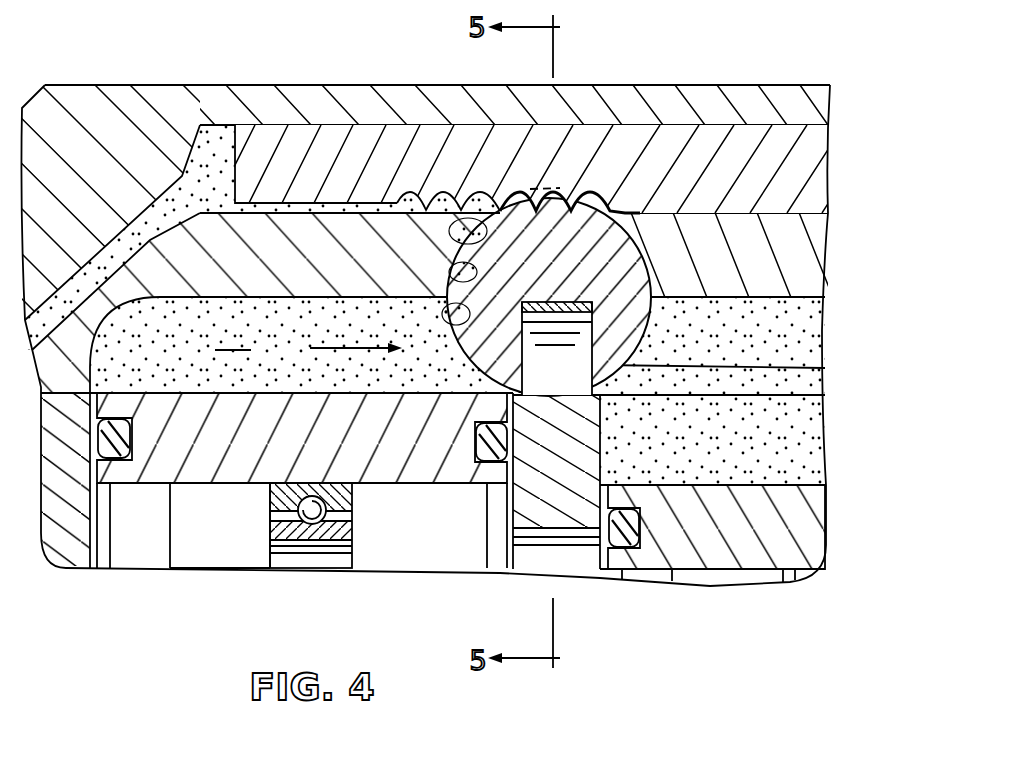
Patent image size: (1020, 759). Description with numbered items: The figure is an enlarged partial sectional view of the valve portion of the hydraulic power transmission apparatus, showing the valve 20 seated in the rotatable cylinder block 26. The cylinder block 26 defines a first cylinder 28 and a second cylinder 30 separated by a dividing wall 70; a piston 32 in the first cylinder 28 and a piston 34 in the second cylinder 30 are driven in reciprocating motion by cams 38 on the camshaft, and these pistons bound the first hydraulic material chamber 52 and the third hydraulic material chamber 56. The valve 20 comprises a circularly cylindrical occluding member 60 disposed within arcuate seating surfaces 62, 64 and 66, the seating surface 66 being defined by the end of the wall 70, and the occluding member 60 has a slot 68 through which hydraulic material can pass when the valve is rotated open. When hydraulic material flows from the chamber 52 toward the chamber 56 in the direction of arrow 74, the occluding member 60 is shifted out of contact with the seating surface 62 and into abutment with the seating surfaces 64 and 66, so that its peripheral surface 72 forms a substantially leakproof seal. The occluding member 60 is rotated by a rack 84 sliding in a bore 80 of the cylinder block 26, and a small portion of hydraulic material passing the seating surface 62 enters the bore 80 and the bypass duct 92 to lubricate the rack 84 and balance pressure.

The valve 20 is at (695, 315).
The cylinder block 26 is at (137, 117).
The first cylinder 28 is at (218, 523).
The second cylinder 30 is at (705, 577).
The piston 32 is at (163, 467).
The piston 34 is at (763, 522).
The cam 38 is at (323, 557).
The first hydraulic material chamber 52 is at (325, 345).
The third hydraulic material chamber 56 is at (777, 347).
The occluding member 60 is at (705, 123).
The arcuate seating surface 62 is at (435, 277).
The arcuate seating surface 64 is at (652, 273).
The arcuate seating surface 66 is at (777, 366).
The slot 68 is at (537, 357).
The wall 70 is at (583, 440).
The peripheral surface 72 is at (650, 338).
The arrow 74 is at (333, 358).
The bore 80 is at (213, 153).
The rack 84 is at (328, 155).
The bypass duct 92 is at (135, 230).